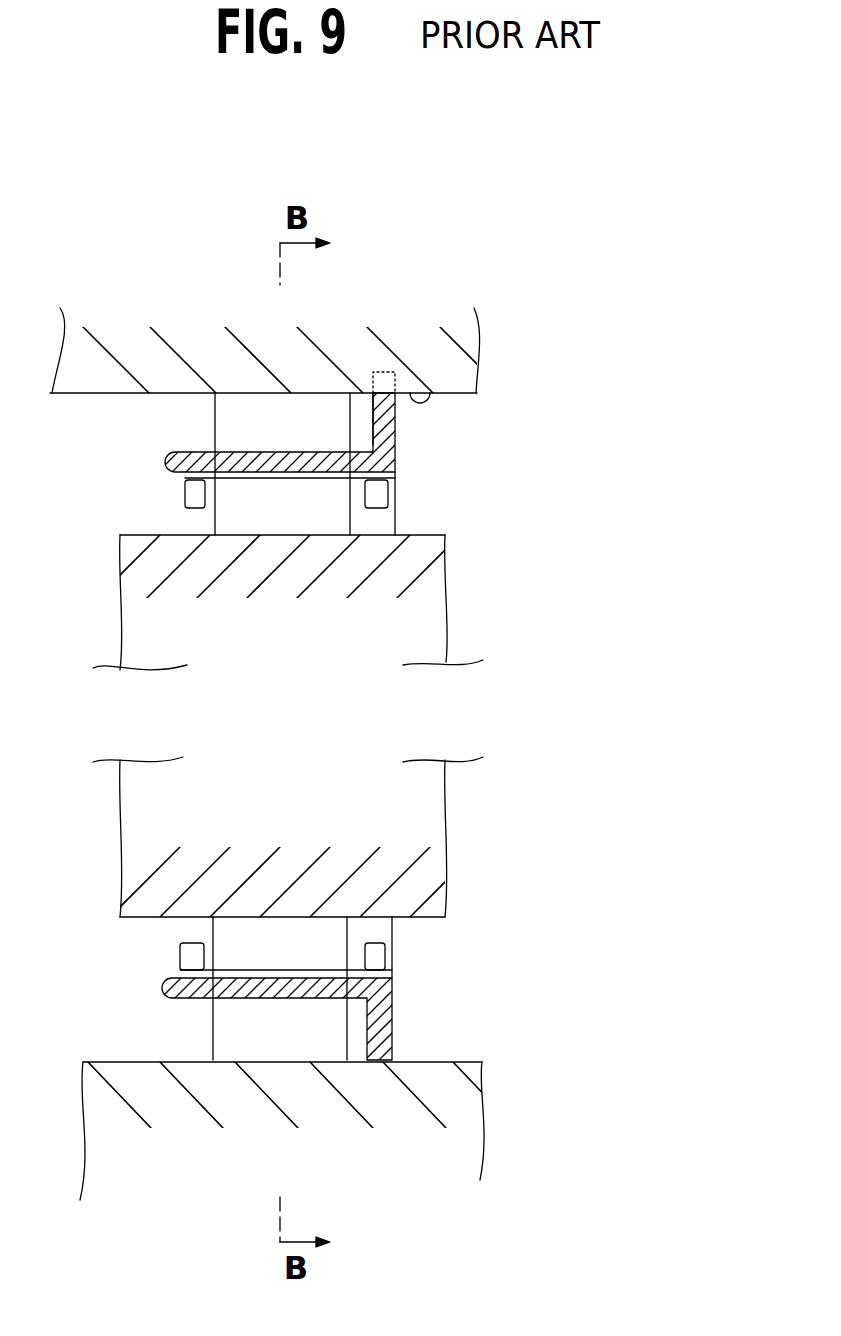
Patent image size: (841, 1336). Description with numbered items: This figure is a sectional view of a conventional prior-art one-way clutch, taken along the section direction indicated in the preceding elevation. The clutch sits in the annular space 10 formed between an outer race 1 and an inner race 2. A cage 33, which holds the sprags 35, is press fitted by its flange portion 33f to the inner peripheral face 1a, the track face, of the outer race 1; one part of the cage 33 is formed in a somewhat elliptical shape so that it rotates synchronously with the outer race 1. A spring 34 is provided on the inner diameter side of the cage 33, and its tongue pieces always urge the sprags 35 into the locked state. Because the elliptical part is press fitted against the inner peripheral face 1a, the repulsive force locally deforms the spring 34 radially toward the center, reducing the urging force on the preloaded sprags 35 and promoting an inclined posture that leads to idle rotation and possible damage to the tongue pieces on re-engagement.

The outer race 1 is at (472, 350).
The inner peripheral face 1a is at (427, 392).
The inner race 2 is at (432, 578).
The annular space 10 is at (183, 407).
The cage 33 is at (172, 460).
The flange portion 33f is at (395, 427).
The spring 34 is at (185, 500).
The sprags 35 is at (325, 517).